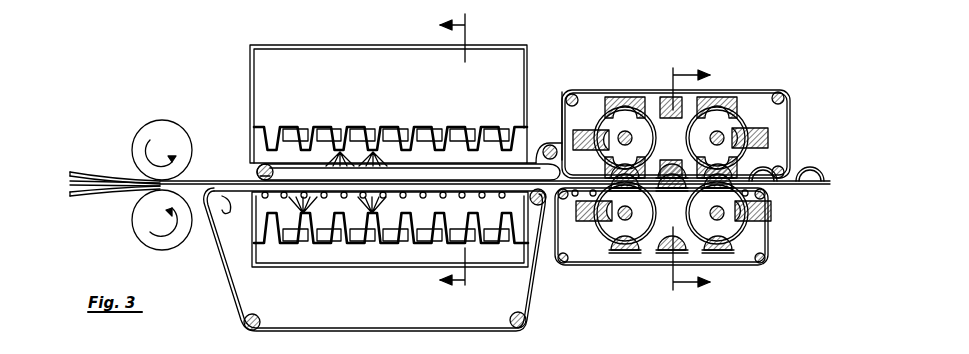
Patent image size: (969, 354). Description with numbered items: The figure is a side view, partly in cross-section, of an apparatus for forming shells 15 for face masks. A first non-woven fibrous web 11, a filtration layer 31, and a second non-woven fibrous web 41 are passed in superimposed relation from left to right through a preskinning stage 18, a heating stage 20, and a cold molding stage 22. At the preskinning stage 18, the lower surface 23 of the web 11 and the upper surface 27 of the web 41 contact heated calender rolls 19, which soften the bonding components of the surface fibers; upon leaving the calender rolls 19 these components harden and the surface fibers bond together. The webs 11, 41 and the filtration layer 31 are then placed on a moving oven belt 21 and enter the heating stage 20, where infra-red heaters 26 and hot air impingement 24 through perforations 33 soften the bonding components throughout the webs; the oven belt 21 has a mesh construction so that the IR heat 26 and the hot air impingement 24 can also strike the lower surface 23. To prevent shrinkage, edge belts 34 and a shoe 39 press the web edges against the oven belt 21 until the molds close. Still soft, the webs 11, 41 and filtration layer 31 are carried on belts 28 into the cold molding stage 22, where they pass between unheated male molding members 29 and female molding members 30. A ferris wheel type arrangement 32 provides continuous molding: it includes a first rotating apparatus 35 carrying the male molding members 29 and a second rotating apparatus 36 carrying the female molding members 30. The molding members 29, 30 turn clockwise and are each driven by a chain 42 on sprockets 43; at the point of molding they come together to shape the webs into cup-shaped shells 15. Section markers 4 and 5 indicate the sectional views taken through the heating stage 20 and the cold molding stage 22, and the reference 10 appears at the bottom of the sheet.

The section line 4- 4 is at (439, 153).
The section line 5- 5 is at (699, 180).
The apparatus 10 is at (390, 273).
The first non-woven fibrous web 11 is at (76, 196).
The shells 15 is at (801, 170).
The preskinning stage 18 is at (172, 112).
The heated calender rolls 19 is at (161, 188).
The heating stage 20 is at (303, 42).
The oven belt 21 is at (240, 308).
The cold molding stage 22 is at (612, 68).
The lower surface 23 is at (122, 191).
The hot air impingement 24 is at (341, 128).
The infra-red heaters 26 is at (456, 128).
The upper surface 27 is at (117, 178).
The belts 28 is at (770, 222).
The male molding members 29 is at (604, 243).
The female molding members 30 is at (598, 134).
The filtration layer 31 is at (70, 184).
The ferris wheel type arrangement 32 is at (760, 70).
The perforations 33 is at (373, 156).
The edge belts 34 is at (537, 155).
The first rotating apparatus 35 is at (660, 258).
The second rotating apparatus 36 is at (660, 92).
The shoe 39 is at (556, 180).
The second non-woven fibrous web 41 is at (77, 171).
The chain 42 is at (760, 130).
The sprockets 43 is at (742, 118).